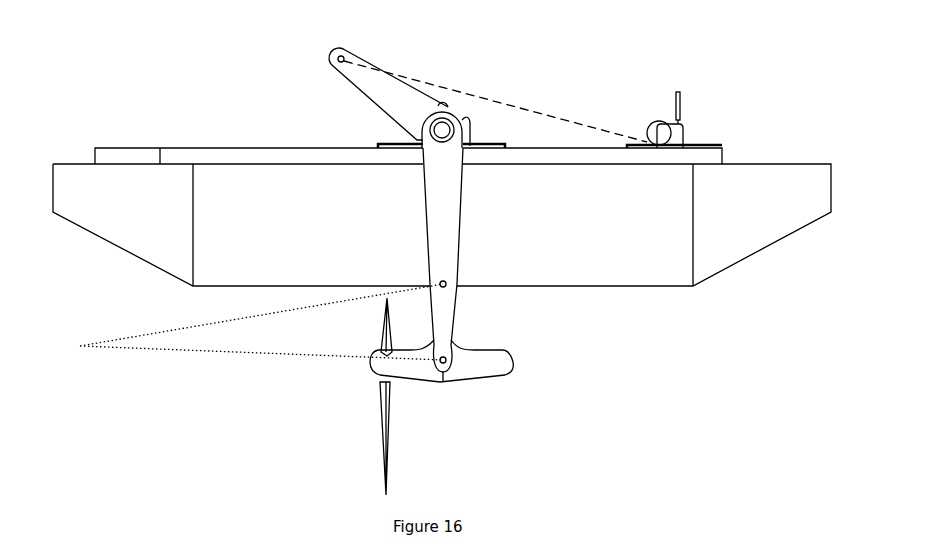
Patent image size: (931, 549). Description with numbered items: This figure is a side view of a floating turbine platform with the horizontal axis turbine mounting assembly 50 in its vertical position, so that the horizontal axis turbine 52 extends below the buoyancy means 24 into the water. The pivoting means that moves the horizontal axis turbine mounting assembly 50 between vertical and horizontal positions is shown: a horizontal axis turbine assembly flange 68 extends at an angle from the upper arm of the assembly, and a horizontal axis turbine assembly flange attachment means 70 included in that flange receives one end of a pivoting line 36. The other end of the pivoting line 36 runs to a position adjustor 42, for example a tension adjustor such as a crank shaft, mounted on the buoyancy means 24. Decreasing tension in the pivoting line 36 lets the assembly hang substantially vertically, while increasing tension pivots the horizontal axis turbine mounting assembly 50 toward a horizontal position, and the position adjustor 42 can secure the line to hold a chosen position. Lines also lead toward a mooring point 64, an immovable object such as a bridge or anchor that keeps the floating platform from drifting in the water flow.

The buoyancy means 24 is at (745, 256).
The pivoting line 36 is at (540, 117).
The position adjustor 42 is at (683, 132).
The horizontal axis turbine mounting assembly 50 is at (457, 268).
The horizontal axis turbine 52 is at (510, 375).
The mooring point 64 is at (80, 346).
The horizontal axis turbine assembly flange 68 is at (362, 89).
The horizontal axis turbine assembly flange attachment means 70 is at (339, 54).